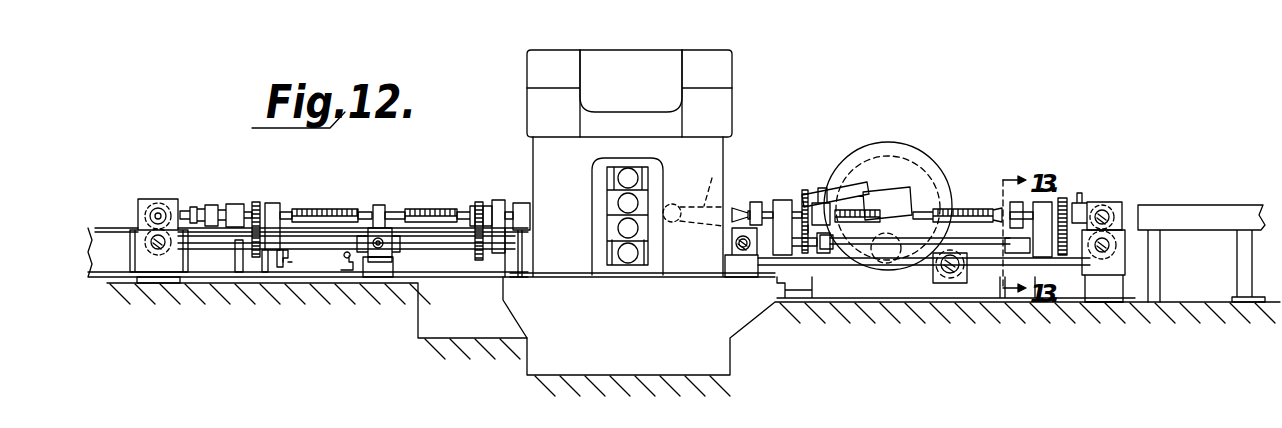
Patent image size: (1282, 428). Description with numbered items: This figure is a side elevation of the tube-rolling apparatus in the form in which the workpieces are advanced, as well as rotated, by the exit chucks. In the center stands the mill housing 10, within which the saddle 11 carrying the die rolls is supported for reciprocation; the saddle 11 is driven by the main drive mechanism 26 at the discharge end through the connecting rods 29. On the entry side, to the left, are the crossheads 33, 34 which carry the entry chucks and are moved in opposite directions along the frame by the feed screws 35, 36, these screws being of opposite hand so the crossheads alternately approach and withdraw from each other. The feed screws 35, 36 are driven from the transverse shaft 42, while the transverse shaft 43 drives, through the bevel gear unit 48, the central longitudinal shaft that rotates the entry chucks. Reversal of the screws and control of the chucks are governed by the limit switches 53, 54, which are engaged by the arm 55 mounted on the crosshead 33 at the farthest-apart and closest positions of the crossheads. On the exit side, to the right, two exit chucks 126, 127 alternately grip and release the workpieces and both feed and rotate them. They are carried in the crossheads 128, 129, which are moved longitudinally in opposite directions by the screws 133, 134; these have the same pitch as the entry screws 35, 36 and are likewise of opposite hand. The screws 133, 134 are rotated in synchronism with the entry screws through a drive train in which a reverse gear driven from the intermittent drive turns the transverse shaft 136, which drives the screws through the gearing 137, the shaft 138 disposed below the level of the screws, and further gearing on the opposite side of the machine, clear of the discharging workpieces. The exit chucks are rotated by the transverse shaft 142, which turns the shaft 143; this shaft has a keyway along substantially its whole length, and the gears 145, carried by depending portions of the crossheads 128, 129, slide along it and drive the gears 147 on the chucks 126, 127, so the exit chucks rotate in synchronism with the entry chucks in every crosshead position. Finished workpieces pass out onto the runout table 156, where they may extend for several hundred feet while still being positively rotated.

The mill housing 10 is at (689, 48).
The saddle 11 is at (604, 206).
The main drive mechanism 26 is at (904, 140).
The connecting rods 29 is at (693, 189).
The crosshead 33 is at (285, 205).
The crosshead 34 is at (512, 187).
The feed screw 35 is at (448, 210).
The feed screw 36 is at (328, 209).
The transverse shaft 42 is at (158, 248).
The transverse shaft 43 is at (385, 245).
The bevel gear unit 48 is at (380, 232).
The limit switch 53 is at (281, 266).
The limit switch 54 is at (347, 270).
The arm 55 is at (290, 256).
The exit chuck 126 is at (772, 185).
The exit chuck 127 is at (1048, 200).
The crosshead 128 is at (786, 205).
The crosshead 129 is at (1064, 197).
The screw 133 is at (872, 212).
The screw 134 is at (966, 207).
The transverse shaft 136 is at (1118, 212).
The gearing 137 is at (1108, 250).
The shaft 138 is at (1112, 280).
The transverse shaft 142 is at (740, 252).
The shaft 143 is at (958, 278).
The gears 145 is at (806, 255).
The gears 147 is at (806, 190).
The runout table 156 is at (1234, 206).